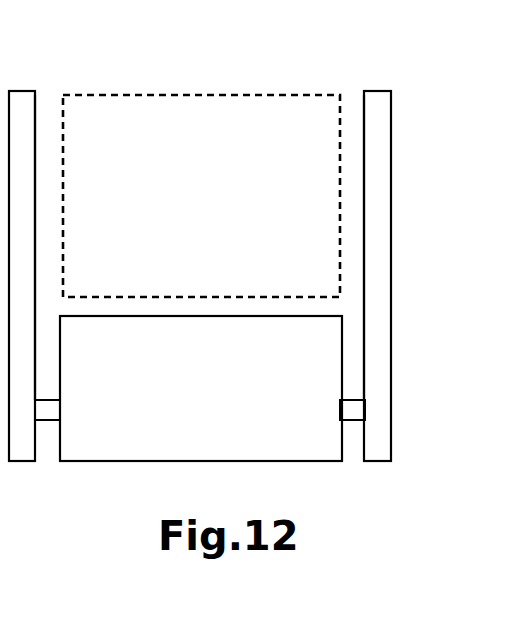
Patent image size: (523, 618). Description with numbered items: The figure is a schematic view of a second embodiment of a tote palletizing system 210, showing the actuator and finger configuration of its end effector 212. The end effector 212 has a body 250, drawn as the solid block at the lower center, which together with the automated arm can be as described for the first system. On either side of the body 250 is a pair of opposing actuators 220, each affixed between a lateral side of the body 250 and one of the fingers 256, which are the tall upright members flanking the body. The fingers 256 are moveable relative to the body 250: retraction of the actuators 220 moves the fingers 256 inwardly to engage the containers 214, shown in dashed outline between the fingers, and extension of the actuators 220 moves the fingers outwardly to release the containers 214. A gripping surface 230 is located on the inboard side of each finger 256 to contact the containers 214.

The tote palletizing system 210 is at (208, 28).
The end effector 212 is at (127, 515).
The containers 214 is at (222, 95).
The actuators 220 is at (48, 413).
The gripping surface 230 is at (35, 206).
The body 250 is at (219, 374).
The fingers 256 is at (22, 123).